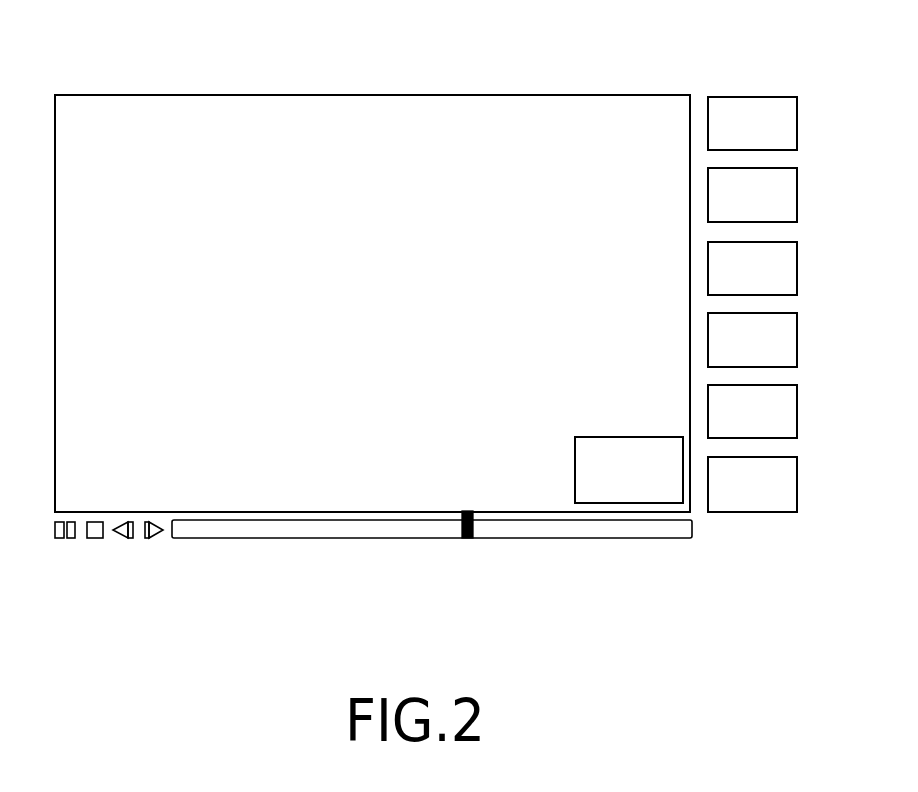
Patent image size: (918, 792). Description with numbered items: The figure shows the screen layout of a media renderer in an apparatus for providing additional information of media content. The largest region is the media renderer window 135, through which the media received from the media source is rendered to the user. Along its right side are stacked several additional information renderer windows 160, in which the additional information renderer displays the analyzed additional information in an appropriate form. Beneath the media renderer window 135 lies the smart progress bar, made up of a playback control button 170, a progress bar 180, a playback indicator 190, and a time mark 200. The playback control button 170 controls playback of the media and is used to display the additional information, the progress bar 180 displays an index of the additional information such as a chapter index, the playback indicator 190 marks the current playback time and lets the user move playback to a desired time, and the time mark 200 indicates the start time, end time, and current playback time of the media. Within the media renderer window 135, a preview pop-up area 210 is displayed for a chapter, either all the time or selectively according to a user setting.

The media renderer window 135 is at (370, 95).
The additional information renderer window 160 is at (752, 97).
The playback control button 170 is at (96, 539).
The progress bar 180 is at (694, 530).
The playback indicator 190 is at (466, 511).
The time mark 200 is at (704, 563).
The preview pop-up area 210 is at (628, 437).